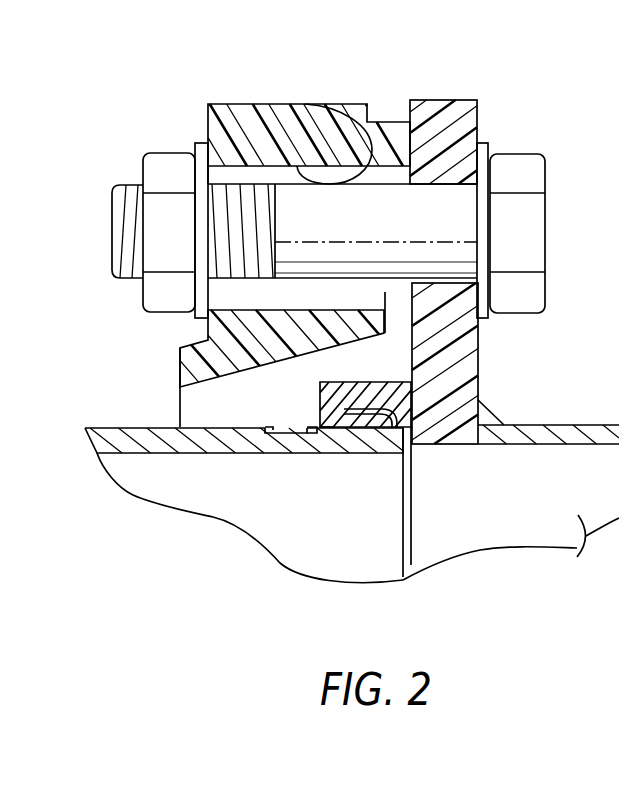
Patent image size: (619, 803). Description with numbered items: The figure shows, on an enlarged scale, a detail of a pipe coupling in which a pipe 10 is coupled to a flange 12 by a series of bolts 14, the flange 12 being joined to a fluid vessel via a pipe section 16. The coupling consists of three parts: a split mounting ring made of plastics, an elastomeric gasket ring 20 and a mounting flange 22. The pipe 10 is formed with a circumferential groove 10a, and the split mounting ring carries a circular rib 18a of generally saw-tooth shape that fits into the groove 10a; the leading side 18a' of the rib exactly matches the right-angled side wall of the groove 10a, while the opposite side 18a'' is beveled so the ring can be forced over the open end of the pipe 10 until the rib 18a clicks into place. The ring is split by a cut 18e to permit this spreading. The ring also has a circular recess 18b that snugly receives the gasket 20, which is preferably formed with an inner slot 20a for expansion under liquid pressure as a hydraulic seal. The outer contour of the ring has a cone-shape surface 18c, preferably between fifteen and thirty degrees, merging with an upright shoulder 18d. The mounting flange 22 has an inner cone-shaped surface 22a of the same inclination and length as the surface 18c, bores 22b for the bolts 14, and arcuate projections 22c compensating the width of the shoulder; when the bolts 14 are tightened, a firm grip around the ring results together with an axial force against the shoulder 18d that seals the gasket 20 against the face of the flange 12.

The pipe 10 is at (138, 492).
The circumferential groove 10a is at (273, 433).
The flange 12 is at (440, 100).
The bolts 14 is at (517, 154).
The pipe section 16 is at (511, 504).
The circular rib 18a is at (317, 473).
The leading side of the rib 18a' is at (358, 484).
The beveled side of the rib 18a'' is at (293, 402).
The circular recess 18b is at (395, 369).
The cone-shape surface 18c is at (250, 372).
The upright shoulder 18d is at (383, 322).
The cut 18e is at (187, 389).
The elastomeric gasket ring 20 is at (410, 386).
The inner slot 20a is at (362, 432).
The mounting flange 22 is at (234, 108).
The inner cone-shaped surface 22a is at (215, 377).
The bores 22b is at (372, 130).
The arcuate projections 22c is at (406, 296).